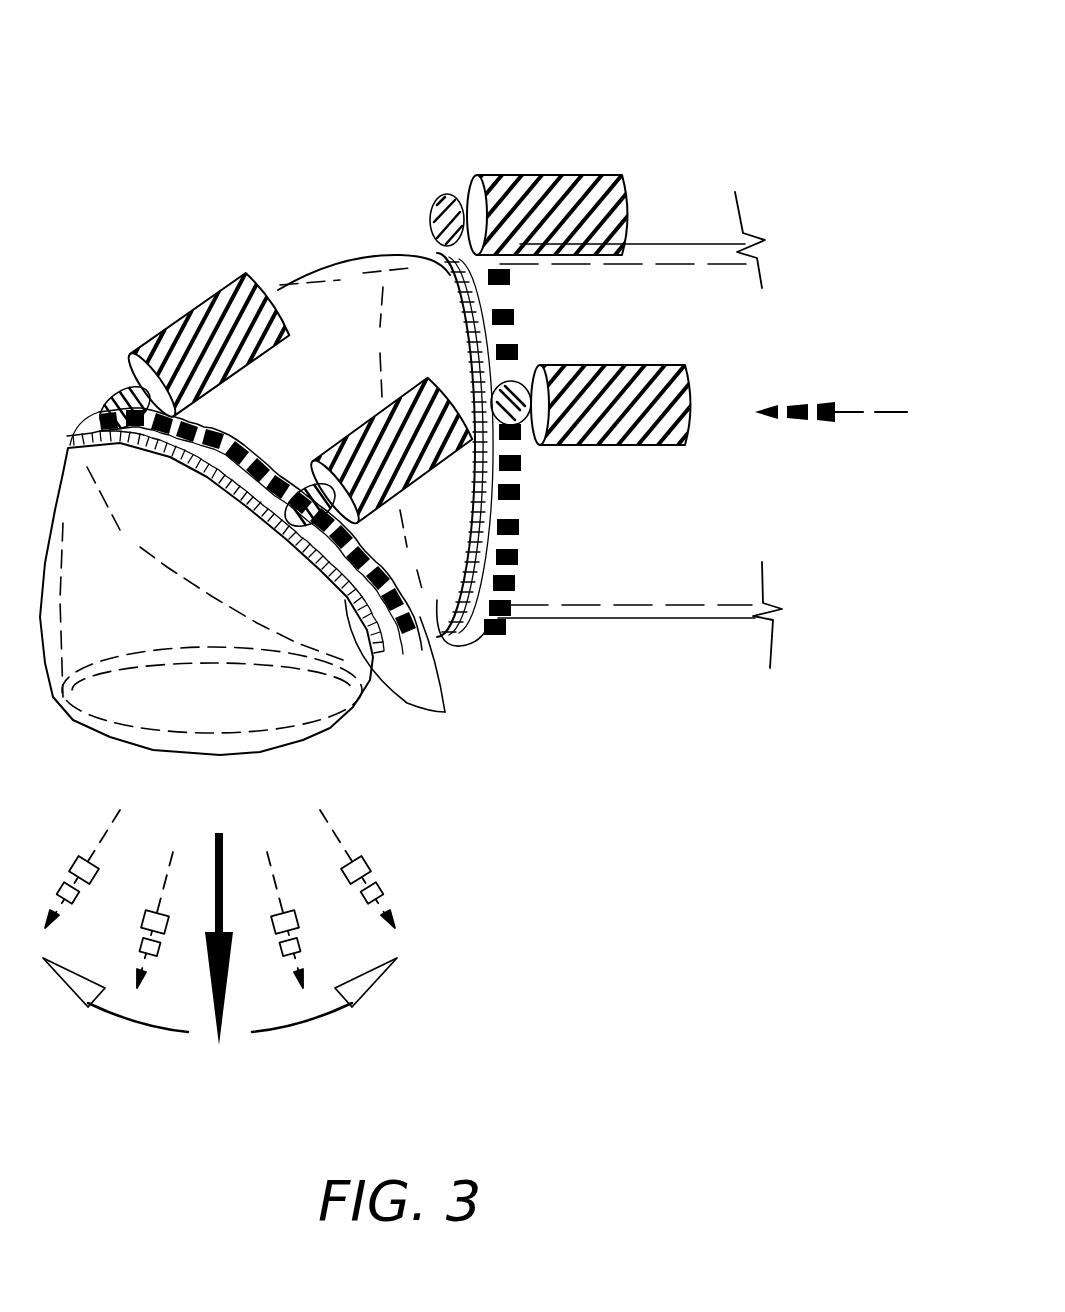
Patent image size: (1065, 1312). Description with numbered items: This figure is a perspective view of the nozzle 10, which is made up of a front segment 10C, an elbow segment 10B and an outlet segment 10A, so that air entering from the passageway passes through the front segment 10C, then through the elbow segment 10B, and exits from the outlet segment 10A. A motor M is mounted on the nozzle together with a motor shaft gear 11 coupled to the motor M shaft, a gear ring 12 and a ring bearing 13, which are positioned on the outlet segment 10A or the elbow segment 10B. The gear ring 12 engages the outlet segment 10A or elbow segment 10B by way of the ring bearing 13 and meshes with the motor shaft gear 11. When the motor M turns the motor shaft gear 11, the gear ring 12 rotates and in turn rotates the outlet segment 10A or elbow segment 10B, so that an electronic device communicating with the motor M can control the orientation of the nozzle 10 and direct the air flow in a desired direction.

The nozzle 10 is at (240, 110).
The outlet segment 10A is at (220, 702).
The elbow segment 10B is at (347, 387).
The front segment 10C is at (573, 513).
The motor shaft gear 11 is at (457, 193).
The gear ring 12 is at (80, 422).
The ring bearing 13 is at (447, 714).
The motor M is at (553, 173).